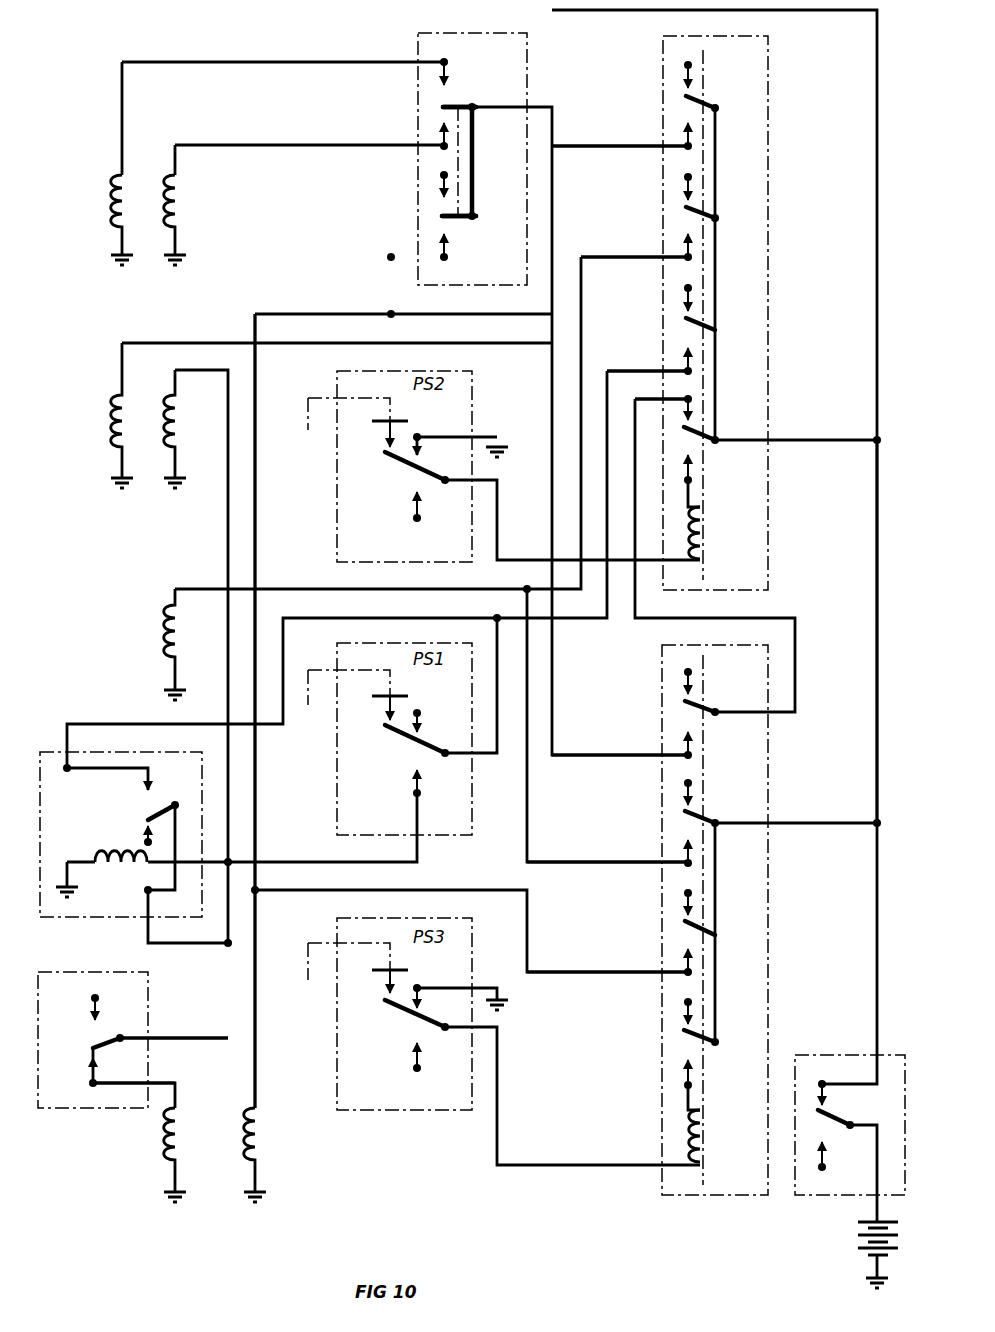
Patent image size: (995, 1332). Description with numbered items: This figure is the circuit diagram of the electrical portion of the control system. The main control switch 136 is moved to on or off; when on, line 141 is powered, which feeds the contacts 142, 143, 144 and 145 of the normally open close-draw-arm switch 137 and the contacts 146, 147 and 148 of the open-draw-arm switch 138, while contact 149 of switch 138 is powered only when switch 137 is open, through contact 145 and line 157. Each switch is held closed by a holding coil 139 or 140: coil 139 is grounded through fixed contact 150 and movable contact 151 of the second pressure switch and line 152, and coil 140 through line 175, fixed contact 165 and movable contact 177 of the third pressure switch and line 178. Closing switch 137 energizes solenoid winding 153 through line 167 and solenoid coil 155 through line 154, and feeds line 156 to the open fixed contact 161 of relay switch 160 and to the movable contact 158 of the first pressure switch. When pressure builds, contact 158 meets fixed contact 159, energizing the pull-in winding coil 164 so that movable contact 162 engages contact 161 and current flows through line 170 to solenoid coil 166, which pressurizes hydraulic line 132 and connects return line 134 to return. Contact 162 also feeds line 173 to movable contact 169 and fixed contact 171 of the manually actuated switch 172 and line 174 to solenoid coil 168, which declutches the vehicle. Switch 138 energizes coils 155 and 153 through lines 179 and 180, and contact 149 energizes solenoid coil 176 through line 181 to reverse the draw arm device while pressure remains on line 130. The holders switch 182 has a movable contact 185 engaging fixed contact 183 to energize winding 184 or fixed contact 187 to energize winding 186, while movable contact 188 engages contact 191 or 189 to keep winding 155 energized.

The hydraulic line 130 is at (310, 710).
The hydraulic line 132 is at (306, 430).
The hydraulic return line 134 is at (306, 980).
The main control switch 136 is at (842, 1053).
The switch 137 is at (770, 230).
The switch 138 is at (770, 923).
The holding coil 139 is at (707, 537).
The holding coil 140 is at (708, 1132).
The line 141 is at (877, 560).
The movable contact 142 is at (700, 98).
The contact 143 is at (705, 212).
The contact 144 is at (705, 325).
The contact 145 is at (705, 432).
The contact 146 is at (705, 816).
The contact 147 is at (705, 928).
The contact 148 is at (705, 1035).
The contact 149 is at (700, 702).
The fixed contact 150 is at (421, 452).
The movable contact 151 is at (410, 470).
The line 152 is at (480, 437).
The solenoid winding 153 is at (165, 628).
The line 154 is at (650, 146).
The solenoid coil 155 is at (262, 1130).
The line 156 is at (655, 371).
The line 157 is at (655, 399).
The movable contact 158 is at (408, 742).
The fixed contact 159 is at (412, 790).
The relay switch 160 is at (145, 752).
The fixed contact 161 is at (146, 788).
The movable contact 162 is at (192, 792).
The pull-in winding coil 164 is at (115, 855).
The fixed contact 165 is at (412, 990).
The solenoid coil 166 is at (182, 420).
The line 167 is at (650, 257).
The solenoid coil 168 is at (170, 1152).
The movable contact 169 is at (100, 1043).
The line 170 is at (257, 485).
The fixed contact 171 is at (97, 1072).
The manually actuated switch 172 is at (90, 968).
The line 173 is at (170, 1038).
The line 174 is at (165, 1083).
The line 175 is at (694, 1072).
The solenoid coil 176 is at (118, 408).
The movable contact 177 is at (425, 1014).
The line 178 is at (475, 987).
The line 179 is at (575, 972).
The line 180 is at (570, 863).
The line 181 is at (590, 755).
The manually actuated switch 182 is at (418, 45).
The fixed contact 183 is at (450, 72).
The winding 184 is at (122, 185).
The movable contact 185 is at (460, 107).
The winding 186 is at (180, 208).
The fixed contact 187 is at (440, 132).
The movable contact 188 is at (460, 226).
The contact 189 is at (450, 185).
The contact 191 is at (447, 257).